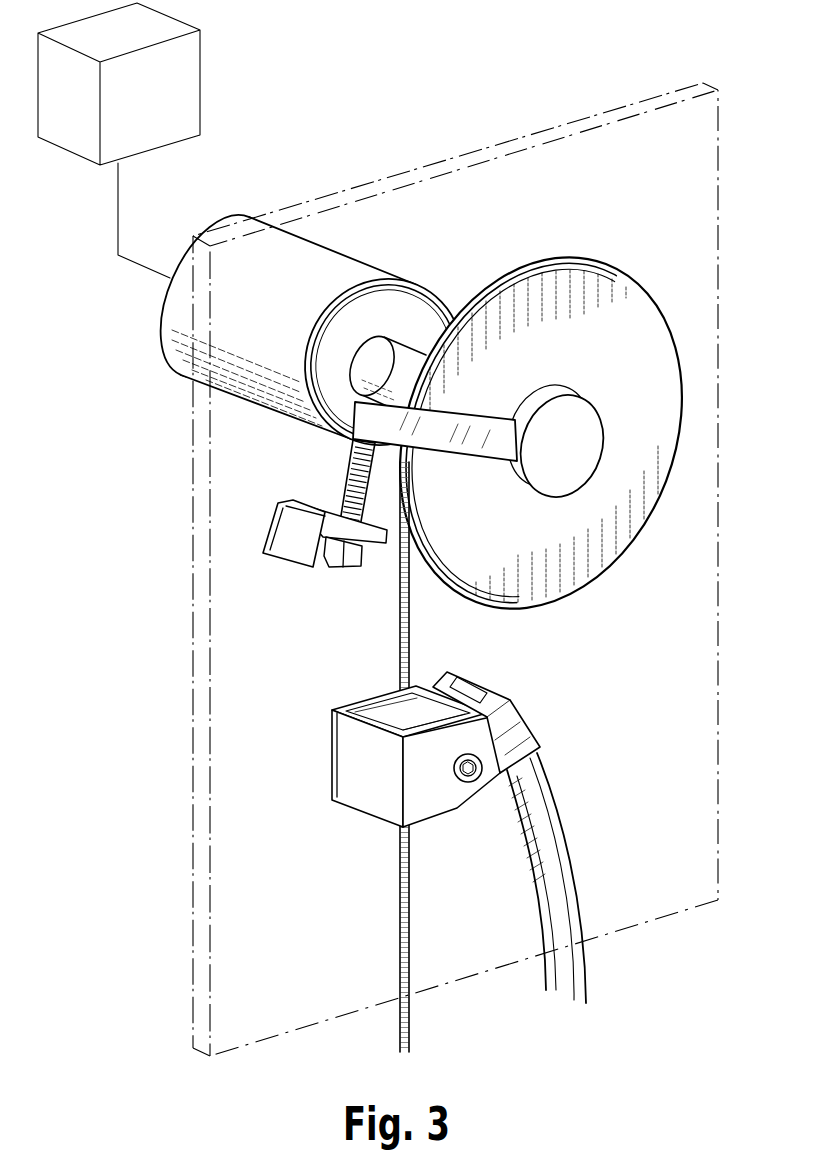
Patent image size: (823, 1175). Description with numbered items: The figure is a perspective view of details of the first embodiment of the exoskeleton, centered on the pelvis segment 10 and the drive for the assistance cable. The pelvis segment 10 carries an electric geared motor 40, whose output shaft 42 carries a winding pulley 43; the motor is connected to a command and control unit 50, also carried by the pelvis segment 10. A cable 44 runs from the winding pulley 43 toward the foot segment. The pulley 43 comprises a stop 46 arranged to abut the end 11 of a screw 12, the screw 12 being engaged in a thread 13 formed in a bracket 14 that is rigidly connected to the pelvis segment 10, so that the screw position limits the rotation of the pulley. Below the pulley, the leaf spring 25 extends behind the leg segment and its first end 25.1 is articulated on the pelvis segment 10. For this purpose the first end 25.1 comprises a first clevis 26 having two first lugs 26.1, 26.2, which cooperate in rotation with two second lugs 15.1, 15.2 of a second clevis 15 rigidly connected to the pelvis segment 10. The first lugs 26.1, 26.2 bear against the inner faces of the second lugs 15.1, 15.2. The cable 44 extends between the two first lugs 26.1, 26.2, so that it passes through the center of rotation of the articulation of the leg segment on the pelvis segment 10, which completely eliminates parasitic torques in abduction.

The pelvis segment 10 is at (427, 170).
The end of the screw 11 is at (375, 480).
The screw 12 is at (340, 560).
The thread 13 is at (338, 518).
The bracket 14 is at (283, 560).
The second clevis 15 is at (350, 758).
The second lug 15.1 is at (427, 812).
The second lug 15.2 is at (380, 716).
The leaf spring 25 is at (573, 877).
The first end of the leaf spring 25.1 is at (537, 783).
The first clevis 26 is at (513, 711).
The first lug 26.1 is at (500, 750).
The first lug 26.2 is at (431, 718).
The electric geared motor 40 is at (267, 393).
The output shaft 42 is at (392, 348).
The winding pulley 43 is at (634, 520).
The cable 44 is at (398, 902).
The stop 46 is at (484, 429).
The command and control unit 50 is at (193, 83).